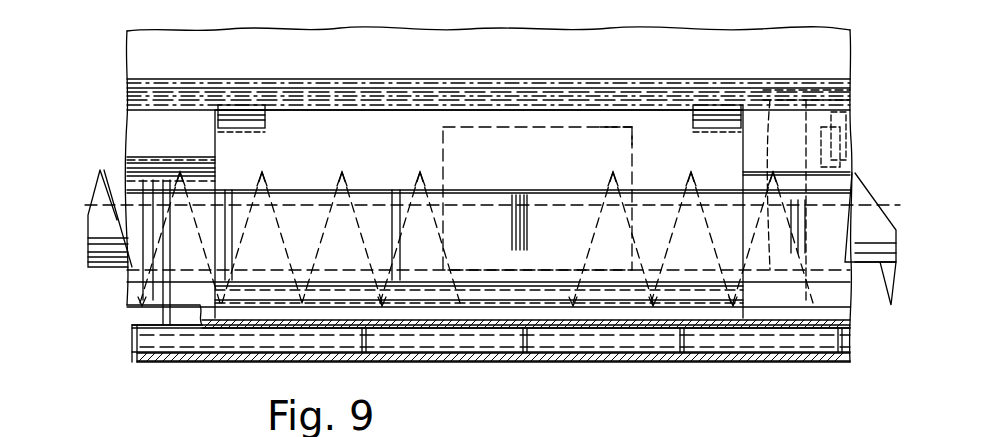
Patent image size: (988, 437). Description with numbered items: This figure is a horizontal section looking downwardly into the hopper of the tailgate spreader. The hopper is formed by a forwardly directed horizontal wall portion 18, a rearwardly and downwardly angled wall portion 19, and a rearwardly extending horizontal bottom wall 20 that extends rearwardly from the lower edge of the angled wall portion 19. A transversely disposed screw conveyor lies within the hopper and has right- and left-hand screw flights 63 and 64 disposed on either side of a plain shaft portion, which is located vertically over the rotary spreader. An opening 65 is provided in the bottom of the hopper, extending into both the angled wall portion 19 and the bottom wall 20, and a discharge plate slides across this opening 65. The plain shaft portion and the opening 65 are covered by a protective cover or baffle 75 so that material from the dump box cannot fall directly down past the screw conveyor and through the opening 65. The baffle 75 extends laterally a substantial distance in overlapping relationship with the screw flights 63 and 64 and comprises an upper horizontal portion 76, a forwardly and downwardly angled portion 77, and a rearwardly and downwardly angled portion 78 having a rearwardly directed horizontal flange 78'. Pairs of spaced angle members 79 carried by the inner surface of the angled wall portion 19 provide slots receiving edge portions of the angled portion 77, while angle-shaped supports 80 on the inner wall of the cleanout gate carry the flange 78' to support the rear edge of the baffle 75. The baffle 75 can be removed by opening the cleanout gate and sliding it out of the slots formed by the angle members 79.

The horizontal wall portion 18 is at (695, 33).
The angled wall portion 19 is at (135, 144).
The bottom wall 20 is at (133, 187).
The right-hand screw flight 63 is at (350, 193).
The left-hand screw flight 64 is at (688, 190).
The opening 65 is at (630, 138).
The protective cover or baffle 75 is at (323, 100).
The upper horizontal portion 76 is at (537, 217).
The forwardly and downwardly angled portion 77 is at (480, 147).
The rearwardly and downwardly angled portion 78 is at (526, 353).
The horizontal flange 78' is at (493, 360).
The spaced angle members 79 is at (240, 112).
The angle-shaped supports 80 is at (238, 312).